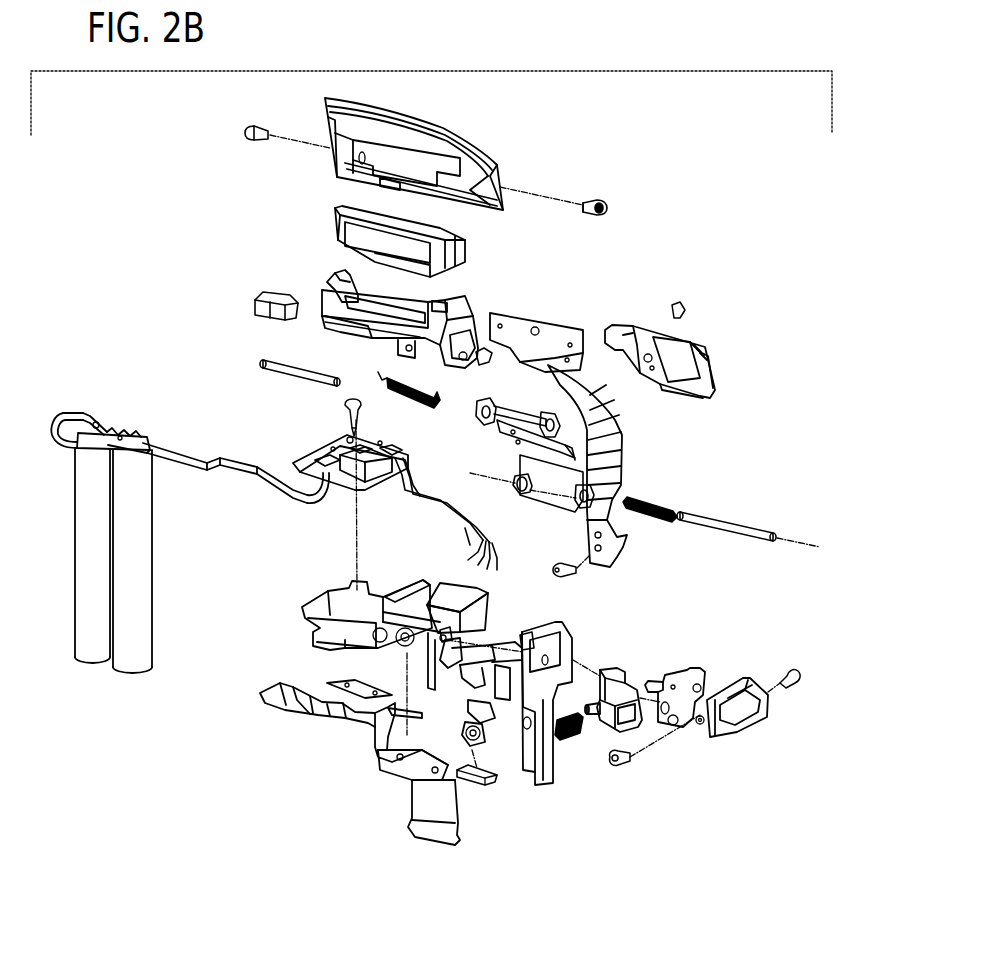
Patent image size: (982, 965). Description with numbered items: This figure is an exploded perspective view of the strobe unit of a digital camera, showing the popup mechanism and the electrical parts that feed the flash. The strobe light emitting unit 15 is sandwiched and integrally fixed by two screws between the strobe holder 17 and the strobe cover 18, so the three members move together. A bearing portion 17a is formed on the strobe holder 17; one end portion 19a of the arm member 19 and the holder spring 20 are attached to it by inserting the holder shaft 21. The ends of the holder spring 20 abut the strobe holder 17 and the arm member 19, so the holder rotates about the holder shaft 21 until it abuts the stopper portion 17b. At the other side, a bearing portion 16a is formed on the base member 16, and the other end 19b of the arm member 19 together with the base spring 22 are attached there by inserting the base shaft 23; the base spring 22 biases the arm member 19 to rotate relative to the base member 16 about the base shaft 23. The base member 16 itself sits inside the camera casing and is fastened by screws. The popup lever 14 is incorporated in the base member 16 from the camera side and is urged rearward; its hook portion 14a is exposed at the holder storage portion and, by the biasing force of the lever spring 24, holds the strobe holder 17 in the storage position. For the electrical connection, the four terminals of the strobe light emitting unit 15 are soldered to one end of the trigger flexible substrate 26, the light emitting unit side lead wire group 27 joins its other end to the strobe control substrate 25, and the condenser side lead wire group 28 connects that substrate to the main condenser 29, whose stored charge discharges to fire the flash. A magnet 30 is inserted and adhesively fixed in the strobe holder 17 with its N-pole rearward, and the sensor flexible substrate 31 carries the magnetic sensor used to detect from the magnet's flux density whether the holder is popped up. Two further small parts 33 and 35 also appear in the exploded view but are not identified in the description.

The popup lever 14 is at (652, 688).
The hook portion 14a is at (618, 676).
The strobe light emitting unit 15 is at (335, 222).
The base member 16 is at (567, 637).
The bearing portion 16a is at (447, 640).
The strobe holder 17 is at (330, 276).
The bearing portion 17a is at (372, 350).
The stopper portion 17b is at (484, 356).
The strobe cover 18 is at (497, 157).
The arm member 19 is at (565, 450).
The one end portion 19a is at (548, 418).
The other end 19b is at (590, 505).
The holder spring 20 is at (414, 402).
The holder shaft 21 is at (297, 378).
The base spring 22 is at (660, 500).
The base shaft 23 is at (730, 520).
The lever spring 24 is at (570, 736).
The strobe control substrate 25 is at (340, 485).
The trigger flexible substrate 26 is at (553, 322).
The light emitting unit side lead wire group 27 is at (420, 505).
The condenser side lead wire group 28 is at (210, 465).
The main condenser 29 is at (121, 670).
The magnet 30 is at (255, 305).
The sensor flexible substrate 31 is at (326, 718).
The board 33 is at (690, 341).
The bar 35 is at (478, 786).